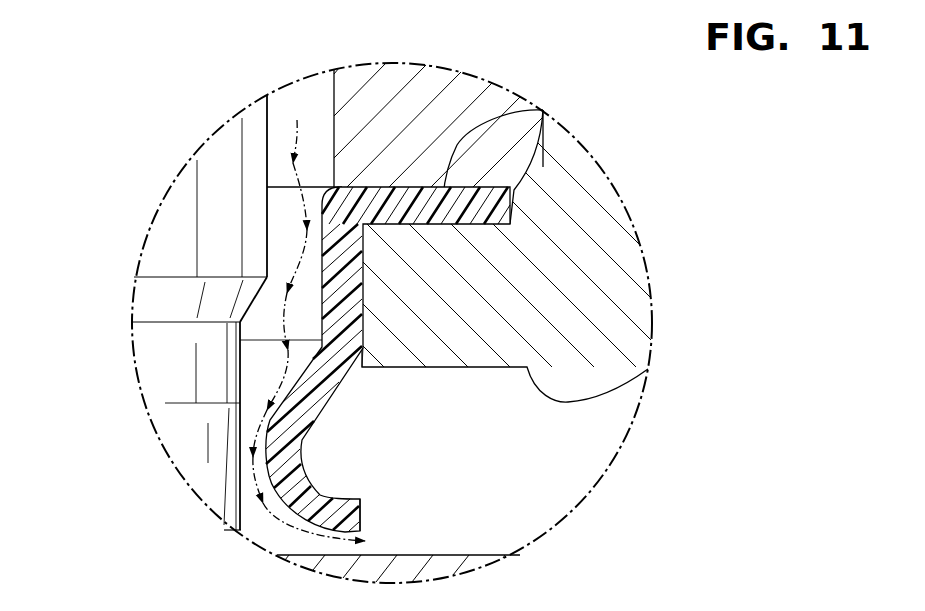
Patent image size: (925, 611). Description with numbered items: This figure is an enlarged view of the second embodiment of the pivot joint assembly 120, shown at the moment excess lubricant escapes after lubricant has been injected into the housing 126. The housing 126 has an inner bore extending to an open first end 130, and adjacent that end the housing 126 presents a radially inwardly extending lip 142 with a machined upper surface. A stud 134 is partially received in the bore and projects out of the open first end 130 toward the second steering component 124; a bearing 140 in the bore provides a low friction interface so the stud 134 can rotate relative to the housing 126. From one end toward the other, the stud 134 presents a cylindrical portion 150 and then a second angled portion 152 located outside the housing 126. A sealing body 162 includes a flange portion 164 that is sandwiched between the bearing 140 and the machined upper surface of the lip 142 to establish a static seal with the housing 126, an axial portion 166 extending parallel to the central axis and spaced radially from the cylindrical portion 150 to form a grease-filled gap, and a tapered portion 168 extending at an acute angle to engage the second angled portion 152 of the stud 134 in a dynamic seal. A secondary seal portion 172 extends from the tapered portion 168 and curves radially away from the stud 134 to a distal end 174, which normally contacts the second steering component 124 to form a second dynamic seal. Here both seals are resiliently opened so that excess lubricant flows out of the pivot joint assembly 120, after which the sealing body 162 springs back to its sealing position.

The pivot joint assembly 120 is at (403, 442).
The second steering component 124 is at (450, 568).
The housing 126 is at (660, 169).
The open first end 130 is at (583, 393).
The stud 134 is at (140, 213).
The bearing 140 is at (432, 83).
The lip 142 is at (600, 220).
The cylindrical portion 150 is at (302, 100).
The second angled portion 152 is at (208, 432).
The sealing body 162 is at (331, 443).
The flange portion 164 is at (543, 112).
The axial portion 166 is at (347, 337).
The tapered portion 168 is at (317, 388).
The secondary seal portion 172 is at (237, 531).
The distal end 174 is at (360, 520).